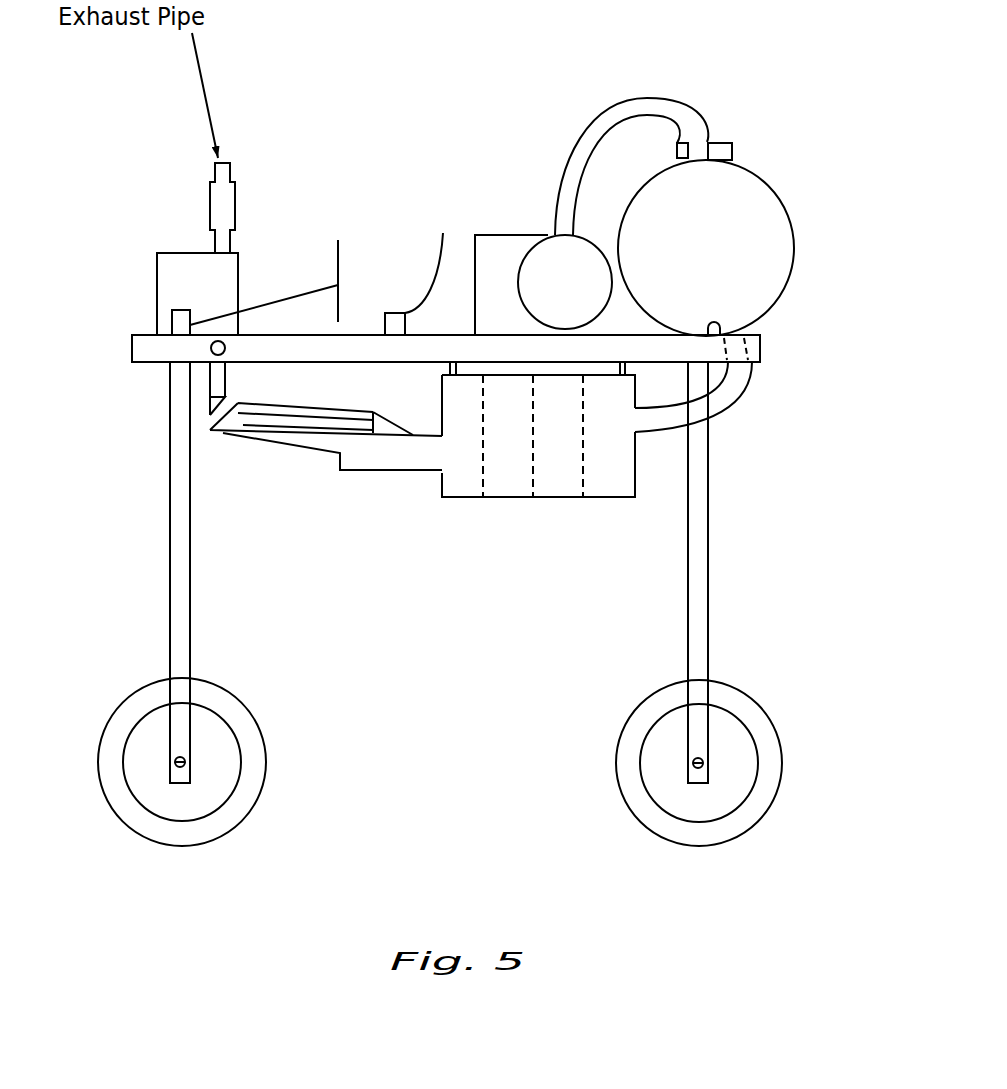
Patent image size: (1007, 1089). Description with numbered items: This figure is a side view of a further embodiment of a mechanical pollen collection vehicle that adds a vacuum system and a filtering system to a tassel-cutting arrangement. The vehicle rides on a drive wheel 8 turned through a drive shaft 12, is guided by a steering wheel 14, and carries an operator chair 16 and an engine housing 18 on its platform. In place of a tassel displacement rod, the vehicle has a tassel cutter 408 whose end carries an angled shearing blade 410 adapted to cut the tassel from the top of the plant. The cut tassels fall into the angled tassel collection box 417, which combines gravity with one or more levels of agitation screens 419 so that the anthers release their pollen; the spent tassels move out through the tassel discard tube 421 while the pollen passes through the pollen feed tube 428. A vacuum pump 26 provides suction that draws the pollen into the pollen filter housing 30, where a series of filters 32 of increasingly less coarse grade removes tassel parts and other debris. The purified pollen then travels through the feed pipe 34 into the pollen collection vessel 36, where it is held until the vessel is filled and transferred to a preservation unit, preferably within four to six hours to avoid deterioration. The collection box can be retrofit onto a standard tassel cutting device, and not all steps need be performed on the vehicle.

The drive wheel 8 is at (237, 823).
The drive shaft 12 is at (173, 645).
The steering wheel 14 is at (302, 293).
The operator chair 16 is at (430, 283).
The engine housing 18 is at (185, 252).
The vacuum pump 26 is at (560, 255).
The pollen filter housing 30 is at (628, 468).
The filters 32 is at (633, 538).
The feed pipe 34 is at (727, 397).
The pollen collection vessel 36 is at (763, 218).
The tassel cutter 408 is at (205, 392).
The shearing blade 410 is at (200, 413).
The tassel collection box 417 is at (227, 437).
The agitation screens 419 is at (323, 432).
The tassel discard tube 421 is at (390, 427).
The pollen feed tube 428 is at (403, 468).